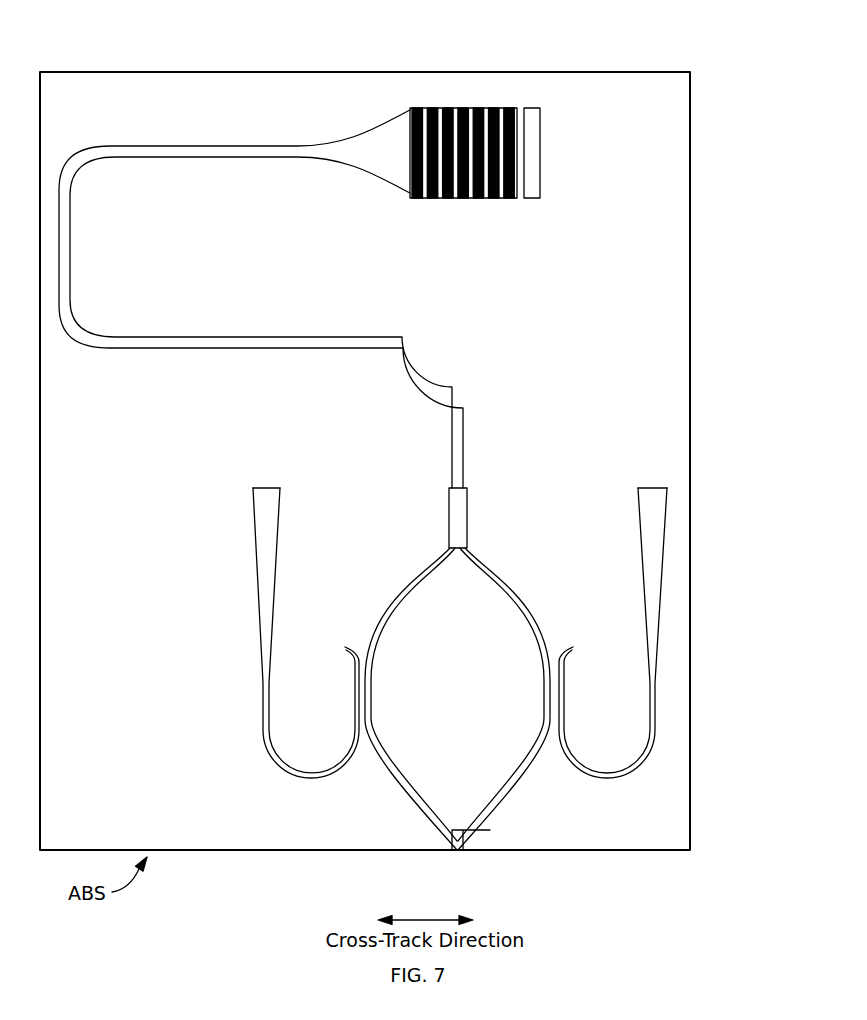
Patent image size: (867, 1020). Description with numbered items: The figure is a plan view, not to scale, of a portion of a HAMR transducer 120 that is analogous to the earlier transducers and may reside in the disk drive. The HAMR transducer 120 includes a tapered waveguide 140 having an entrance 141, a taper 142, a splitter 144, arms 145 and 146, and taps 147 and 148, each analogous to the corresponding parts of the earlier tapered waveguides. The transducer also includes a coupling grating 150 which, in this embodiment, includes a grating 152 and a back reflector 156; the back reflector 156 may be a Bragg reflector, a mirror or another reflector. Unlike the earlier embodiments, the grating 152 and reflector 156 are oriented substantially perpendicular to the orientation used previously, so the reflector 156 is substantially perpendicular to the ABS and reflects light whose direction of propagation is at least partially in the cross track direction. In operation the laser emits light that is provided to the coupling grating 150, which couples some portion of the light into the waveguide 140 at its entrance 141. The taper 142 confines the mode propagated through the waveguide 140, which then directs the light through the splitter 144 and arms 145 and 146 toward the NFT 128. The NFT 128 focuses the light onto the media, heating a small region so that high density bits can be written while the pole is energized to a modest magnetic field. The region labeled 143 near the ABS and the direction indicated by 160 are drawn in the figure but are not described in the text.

The HAMR transducer 120 is at (441, 33).
The NFT 128 is at (478, 832).
The tapered waveguide 140 is at (522, 429).
The entrance 141 is at (428, 214).
The taper 142 is at (343, 122).
The output coupling region 143 is at (452, 868).
The splitter 144 is at (467, 500).
The arm 145 is at (420, 822).
The arm 146 is at (500, 823).
The tap 147 is at (258, 600).
The tap 148 is at (661, 580).
The coupling grating 150 is at (465, 83).
The grating 152 is at (428, 86).
The back reflector 156 is at (541, 155).
The reflected light direction 160 is at (101, 247).